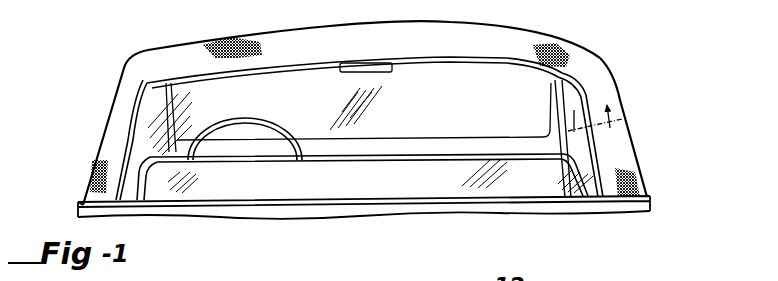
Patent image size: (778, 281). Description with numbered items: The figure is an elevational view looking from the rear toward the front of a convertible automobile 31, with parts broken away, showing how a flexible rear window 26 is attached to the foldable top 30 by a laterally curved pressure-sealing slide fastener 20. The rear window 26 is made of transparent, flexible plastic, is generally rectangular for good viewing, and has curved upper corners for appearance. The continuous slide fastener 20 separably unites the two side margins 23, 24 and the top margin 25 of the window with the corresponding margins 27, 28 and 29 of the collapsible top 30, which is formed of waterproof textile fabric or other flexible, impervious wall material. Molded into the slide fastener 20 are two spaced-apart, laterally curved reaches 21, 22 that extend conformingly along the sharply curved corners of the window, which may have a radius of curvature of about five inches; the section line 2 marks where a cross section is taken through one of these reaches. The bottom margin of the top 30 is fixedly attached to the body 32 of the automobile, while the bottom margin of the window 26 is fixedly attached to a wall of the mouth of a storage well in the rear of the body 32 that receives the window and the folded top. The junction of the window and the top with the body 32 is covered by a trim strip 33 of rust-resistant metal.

The section line 2- 2 is at (595, 131).
The slide fastener 20 is at (403, 57).
The laterally curved reach 21 is at (582, 78).
The laterally curved reach 22 is at (147, 87).
The side margin 23 is at (592, 156).
The side margin 24 is at (137, 160).
The top margin 25 is at (430, 70).
The rear window 26 is at (302, 82).
The margin of top 27 is at (590, 103).
The margin of top 28 is at (133, 115).
The margin of top 29 is at (467, 60).
The foldable top 30 is at (193, 50).
The automobile 31 is at (600, 214).
The body 32 is at (381, 208).
The trim strip 33 is at (83, 208).